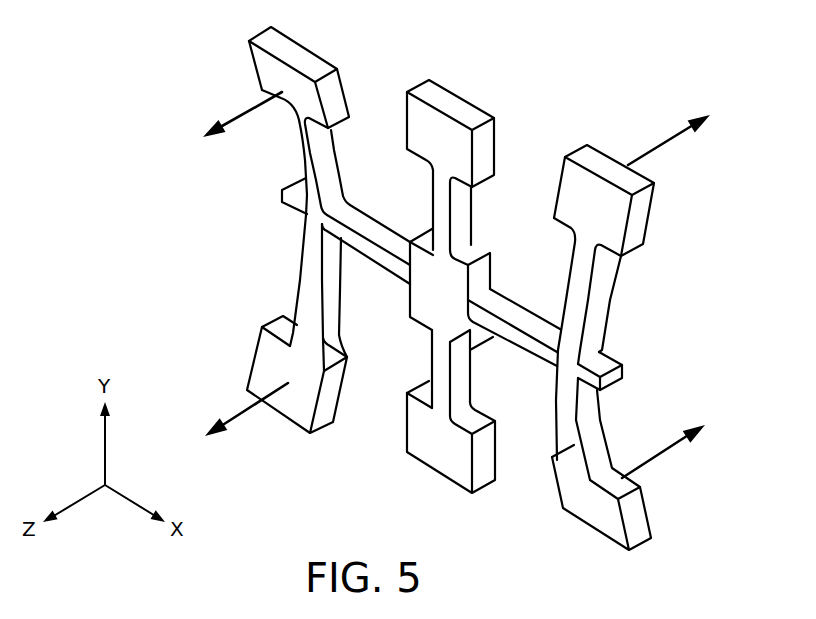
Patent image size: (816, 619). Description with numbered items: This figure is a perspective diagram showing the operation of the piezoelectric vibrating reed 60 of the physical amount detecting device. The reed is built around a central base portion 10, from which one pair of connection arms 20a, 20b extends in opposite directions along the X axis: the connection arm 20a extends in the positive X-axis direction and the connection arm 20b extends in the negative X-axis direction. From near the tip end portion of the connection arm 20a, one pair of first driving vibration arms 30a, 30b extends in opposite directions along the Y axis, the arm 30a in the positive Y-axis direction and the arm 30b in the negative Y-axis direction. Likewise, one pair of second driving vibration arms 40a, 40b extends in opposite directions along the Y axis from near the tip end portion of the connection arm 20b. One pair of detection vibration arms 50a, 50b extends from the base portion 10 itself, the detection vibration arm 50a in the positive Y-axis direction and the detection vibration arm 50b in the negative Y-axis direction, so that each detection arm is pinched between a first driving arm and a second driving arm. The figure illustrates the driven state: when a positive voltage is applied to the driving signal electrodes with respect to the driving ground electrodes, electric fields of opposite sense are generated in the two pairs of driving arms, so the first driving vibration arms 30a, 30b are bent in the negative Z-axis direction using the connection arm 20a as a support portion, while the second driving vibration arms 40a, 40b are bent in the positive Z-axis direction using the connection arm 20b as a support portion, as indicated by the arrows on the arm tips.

The piezoelectric vibrating reed 60 is at (456, 288).
The base portion 10 is at (432, 297).
The connection arm 20a is at (513, 320).
The connection arm 20b is at (364, 225).
The first driving vibration arm 30a is at (590, 313).
The first driving vibration arm 30b is at (588, 433).
The second driving vibration arm 40a is at (308, 159).
The second driving vibration arm 40b is at (308, 283).
The detection vibration arm 50a is at (456, 217).
The detection vibration arm 50b is at (453, 385).